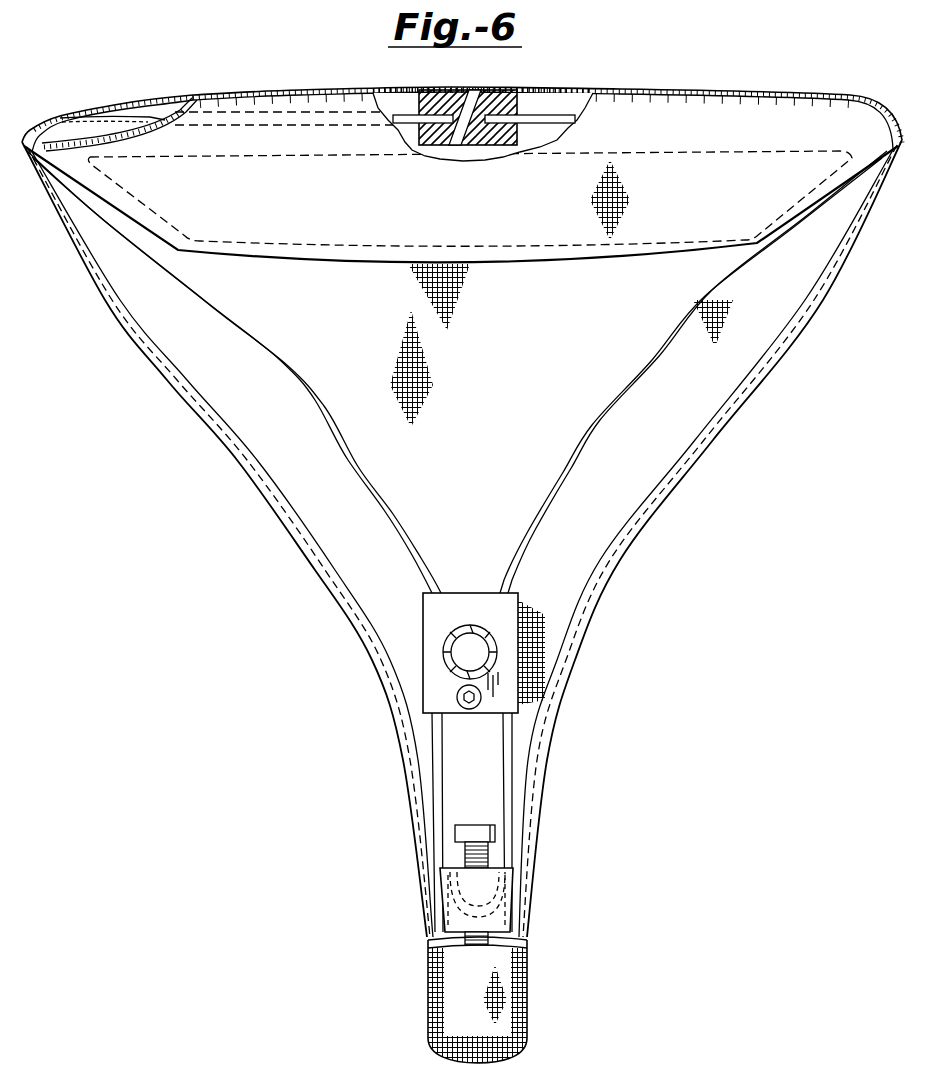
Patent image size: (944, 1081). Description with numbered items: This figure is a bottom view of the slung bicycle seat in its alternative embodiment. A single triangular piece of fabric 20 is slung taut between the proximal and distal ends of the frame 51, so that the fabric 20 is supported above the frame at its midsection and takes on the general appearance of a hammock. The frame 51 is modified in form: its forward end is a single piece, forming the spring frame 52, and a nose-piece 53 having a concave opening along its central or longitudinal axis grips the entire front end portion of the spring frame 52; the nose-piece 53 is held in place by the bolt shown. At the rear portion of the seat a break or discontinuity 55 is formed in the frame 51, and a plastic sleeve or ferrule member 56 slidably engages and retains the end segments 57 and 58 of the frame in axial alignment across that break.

The fabric 20 is at (441, 456).
The frame 51 is at (567, 470).
The spring frame 52 is at (428, 962).
The nose-piece 53 is at (448, 868).
The break or discontinuity 55 is at (458, 113).
The plastic sleeve or ferrule member 56 is at (417, 135).
The end segment 57 is at (487, 100).
The end segment 58 is at (453, 98).